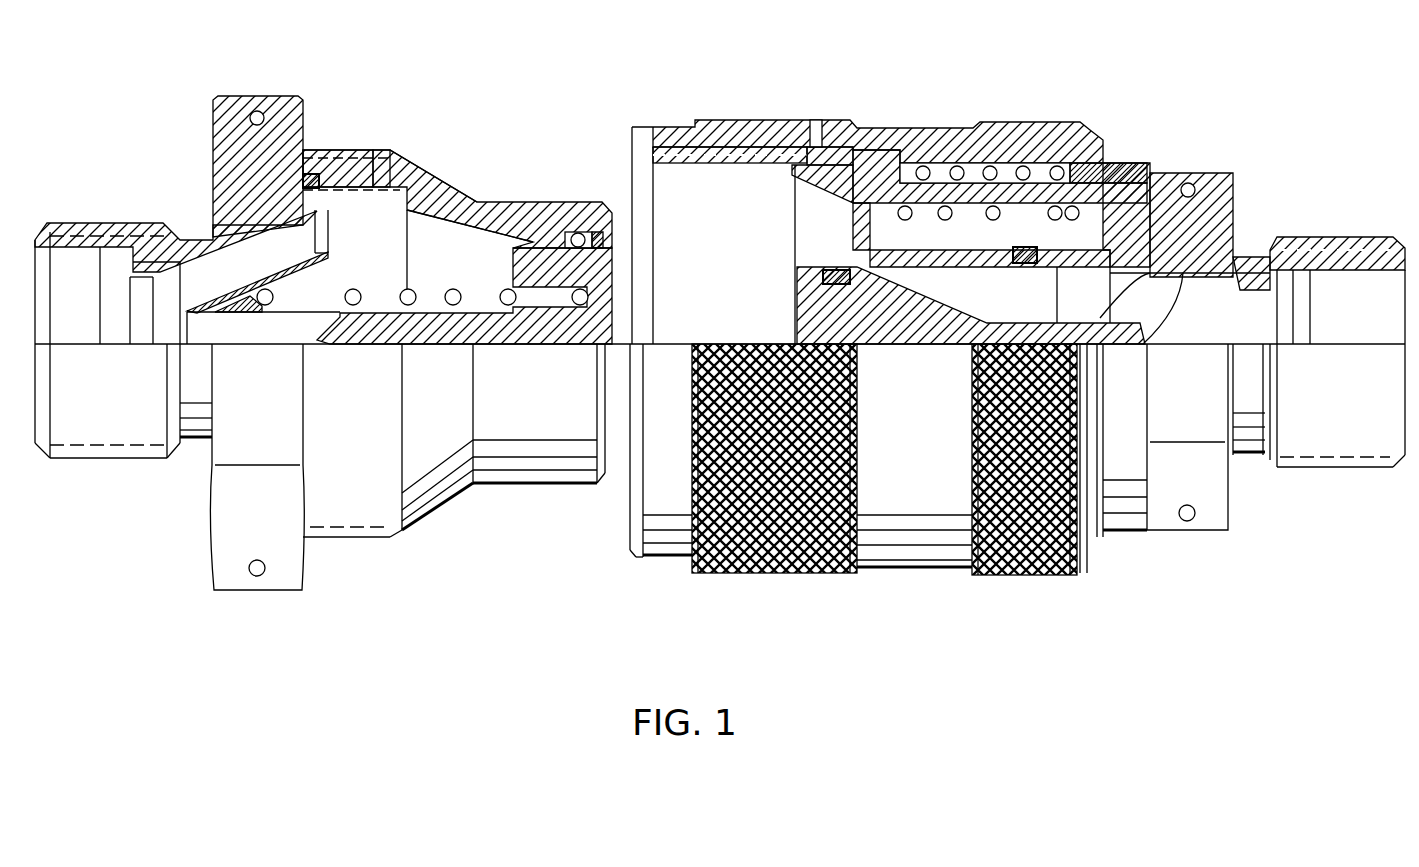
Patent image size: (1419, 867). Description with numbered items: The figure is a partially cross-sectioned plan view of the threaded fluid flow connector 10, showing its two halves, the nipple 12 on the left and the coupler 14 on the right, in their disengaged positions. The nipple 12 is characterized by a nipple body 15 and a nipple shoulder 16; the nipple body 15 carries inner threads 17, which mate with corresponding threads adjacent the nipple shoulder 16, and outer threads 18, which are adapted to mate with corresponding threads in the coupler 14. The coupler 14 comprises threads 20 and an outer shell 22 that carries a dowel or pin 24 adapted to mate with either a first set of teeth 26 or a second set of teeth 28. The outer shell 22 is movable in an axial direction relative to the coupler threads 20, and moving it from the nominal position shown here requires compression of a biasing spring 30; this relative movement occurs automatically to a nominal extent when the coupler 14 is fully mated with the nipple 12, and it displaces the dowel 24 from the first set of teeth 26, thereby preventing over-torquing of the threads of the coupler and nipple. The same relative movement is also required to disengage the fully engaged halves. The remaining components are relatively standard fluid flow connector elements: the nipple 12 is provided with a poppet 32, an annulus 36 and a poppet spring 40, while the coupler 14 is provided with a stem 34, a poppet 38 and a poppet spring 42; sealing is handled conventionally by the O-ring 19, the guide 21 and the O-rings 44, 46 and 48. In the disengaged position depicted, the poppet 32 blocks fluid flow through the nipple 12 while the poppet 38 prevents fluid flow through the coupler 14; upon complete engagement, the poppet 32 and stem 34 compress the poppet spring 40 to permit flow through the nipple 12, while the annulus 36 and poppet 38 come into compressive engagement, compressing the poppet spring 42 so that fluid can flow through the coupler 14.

The threaded fluid flow connector 10 is at (967, 80).
The nipple 12 is at (212, 235).
The coupler 14 is at (1235, 452).
The nipple body 15 is at (442, 192).
The nipple shoulder 16 is at (283, 543).
The inner threads 17 is at (373, 150).
The outer threads 18 is at (352, 150).
The O-ring 19 is at (310, 176).
The threads 20 is at (676, 165).
The guide 21 is at (228, 303).
The outer shell 22 is at (720, 130).
The dowel or pin 24 is at (815, 132).
The first set of teeth 26 is at (860, 148).
The second set of teeth 28 is at (866, 150).
The biasing spring 30 is at (1037, 157).
The poppet 32 is at (373, 333).
The stem 34 is at (907, 320).
The annulus 36 is at (530, 228).
The poppet 38 is at (853, 240).
The poppet spring 40 is at (462, 297).
The poppet spring 42 is at (993, 223).
The O-ring 44 is at (590, 235).
The O-ring 46 is at (797, 312).
The O-ring 48 is at (1037, 273).